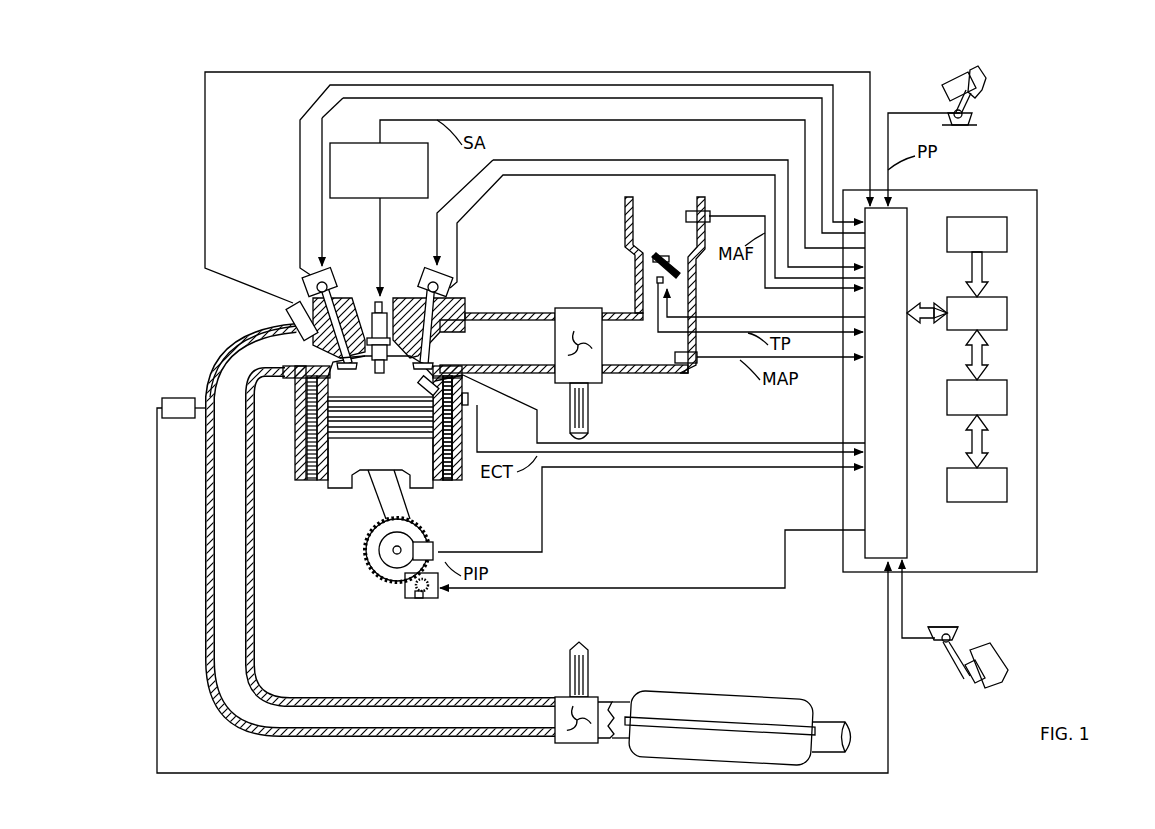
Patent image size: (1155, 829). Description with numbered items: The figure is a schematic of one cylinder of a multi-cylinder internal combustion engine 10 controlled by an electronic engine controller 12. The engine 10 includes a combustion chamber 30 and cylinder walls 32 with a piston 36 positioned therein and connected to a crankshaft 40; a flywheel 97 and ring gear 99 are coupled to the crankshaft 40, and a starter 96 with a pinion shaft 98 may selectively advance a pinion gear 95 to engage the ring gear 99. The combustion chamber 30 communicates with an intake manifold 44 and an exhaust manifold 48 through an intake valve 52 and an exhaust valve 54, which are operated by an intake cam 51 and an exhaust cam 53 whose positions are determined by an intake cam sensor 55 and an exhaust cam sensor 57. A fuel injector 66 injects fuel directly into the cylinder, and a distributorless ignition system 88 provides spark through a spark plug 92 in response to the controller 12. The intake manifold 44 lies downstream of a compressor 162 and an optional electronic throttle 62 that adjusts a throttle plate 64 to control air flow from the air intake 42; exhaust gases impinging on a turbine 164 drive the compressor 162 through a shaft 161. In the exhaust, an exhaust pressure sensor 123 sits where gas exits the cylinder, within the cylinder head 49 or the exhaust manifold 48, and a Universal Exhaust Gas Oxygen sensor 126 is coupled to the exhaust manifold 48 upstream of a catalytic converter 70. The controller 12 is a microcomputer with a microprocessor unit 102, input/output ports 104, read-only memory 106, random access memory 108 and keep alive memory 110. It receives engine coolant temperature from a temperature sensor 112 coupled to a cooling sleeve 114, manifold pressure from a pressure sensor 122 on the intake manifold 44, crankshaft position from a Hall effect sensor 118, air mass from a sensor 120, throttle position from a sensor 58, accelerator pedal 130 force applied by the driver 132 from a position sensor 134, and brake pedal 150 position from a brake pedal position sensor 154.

The internal combustion engine 10 is at (170, 216).
The electronic engine controller 12 is at (1030, 190).
The combustion chamber 30 is at (300, 480).
The cylinder walls 32 is at (335, 520).
The piston 36 is at (368, 488).
The crankshaft 40 is at (385, 572).
The air intake 42 is at (675, 240).
The intake manifold 44 is at (527, 355).
The exhaust manifold 48 is at (250, 375).
The cylinder head 49 is at (292, 303).
The intake cam 51 is at (428, 268).
The intake valve 52 is at (440, 345).
The exhaust cam 53 is at (333, 268).
The exhaust valve 54 is at (365, 345).
The intake cam sensor 55 is at (447, 290).
The exhaust cam sensor 57 is at (308, 290).
The throttle position sensor 58 is at (657, 281).
The electronic throttle 62 is at (680, 273).
The throttle plate 64 is at (653, 259).
The fuel injector 66 is at (470, 392).
The catalytic converter 70 is at (640, 697).
The distributorless ignition system 88 is at (343, 143).
The spark plug 92 is at (385, 310).
The pinion gear 95 is at (426, 598).
The starter 96 is at (432, 598).
The flywheel 97 is at (378, 556).
The pinion shaft 98 is at (418, 598).
The ring gear 99 is at (395, 582).
The microprocessor unit 102 is at (1007, 312).
The input/output ports 104 is at (910, 214).
The read-only memory 106 is at (1007, 232).
The random access memory 108 is at (1007, 397).
The keep alive memory 110 is at (1007, 484).
The temperature sensor 112 is at (475, 405).
The cooling sleeve 114 is at (455, 478).
The Hall effect sensor 118 is at (433, 545).
The air mass sensor 120 is at (705, 210).
The pressure sensor 122 is at (693, 363).
The exhaust pressure sensor 123 is at (290, 314).
The Universal Exhaust Gas Oxygen sensor 126 is at (162, 400).
The accelerator pedal 130 is at (950, 93).
The driver 132 is at (985, 78).
The position sensor 134 is at (977, 118).
The brake pedal 150 is at (962, 678).
The brake pedal position sensor 154 is at (935, 638).
The shaft 161 is at (570, 390).
The compressor 162 is at (578, 308).
The turbine 164 is at (560, 697).